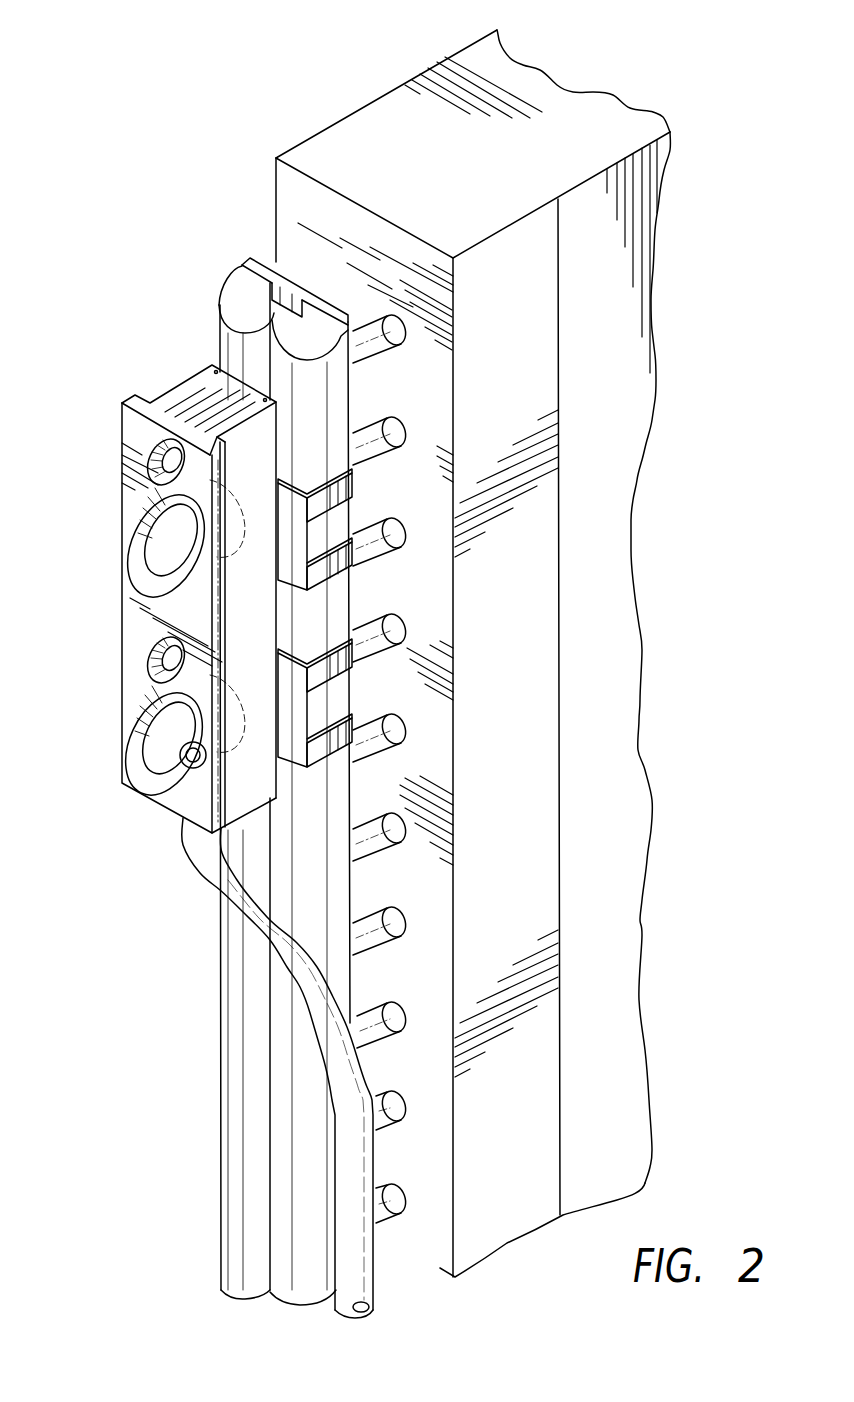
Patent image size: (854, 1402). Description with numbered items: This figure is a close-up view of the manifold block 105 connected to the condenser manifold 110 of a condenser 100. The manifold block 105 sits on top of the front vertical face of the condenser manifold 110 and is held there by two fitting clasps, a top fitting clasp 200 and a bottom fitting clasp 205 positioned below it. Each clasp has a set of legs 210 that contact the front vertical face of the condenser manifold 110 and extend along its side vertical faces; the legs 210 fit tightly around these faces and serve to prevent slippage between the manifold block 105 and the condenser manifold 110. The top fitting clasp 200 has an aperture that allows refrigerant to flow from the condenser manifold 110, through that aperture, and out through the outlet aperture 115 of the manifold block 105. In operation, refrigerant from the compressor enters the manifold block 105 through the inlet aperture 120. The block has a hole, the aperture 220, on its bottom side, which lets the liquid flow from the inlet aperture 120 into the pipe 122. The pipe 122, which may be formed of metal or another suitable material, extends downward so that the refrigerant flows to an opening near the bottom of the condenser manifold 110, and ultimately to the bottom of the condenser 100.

The condenser 100 is at (670, 607).
The manifold block 105 is at (140, 795).
The condenser manifold 110 is at (225, 278).
The outlet aperture 115 is at (178, 548).
The inlet aperture 120 is at (147, 735).
The pipe 122 is at (207, 890).
The top fitting clasp 200 is at (357, 448).
The bottom fitting clasp 205 is at (357, 627).
The legs 210 is at (341, 470).
The aperture 220 is at (164, 770).